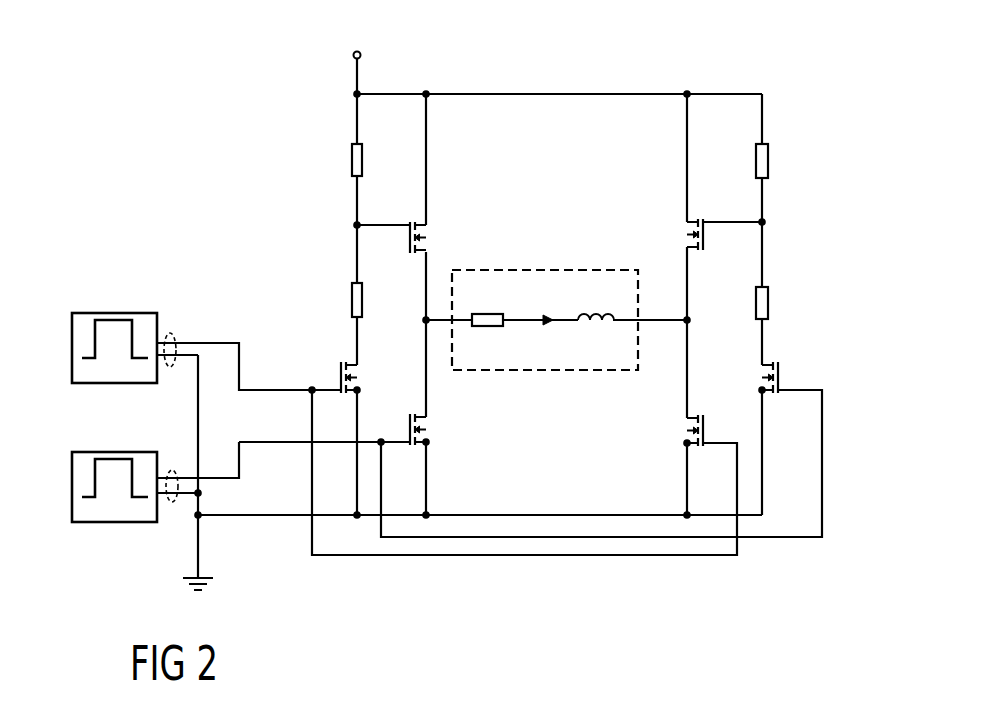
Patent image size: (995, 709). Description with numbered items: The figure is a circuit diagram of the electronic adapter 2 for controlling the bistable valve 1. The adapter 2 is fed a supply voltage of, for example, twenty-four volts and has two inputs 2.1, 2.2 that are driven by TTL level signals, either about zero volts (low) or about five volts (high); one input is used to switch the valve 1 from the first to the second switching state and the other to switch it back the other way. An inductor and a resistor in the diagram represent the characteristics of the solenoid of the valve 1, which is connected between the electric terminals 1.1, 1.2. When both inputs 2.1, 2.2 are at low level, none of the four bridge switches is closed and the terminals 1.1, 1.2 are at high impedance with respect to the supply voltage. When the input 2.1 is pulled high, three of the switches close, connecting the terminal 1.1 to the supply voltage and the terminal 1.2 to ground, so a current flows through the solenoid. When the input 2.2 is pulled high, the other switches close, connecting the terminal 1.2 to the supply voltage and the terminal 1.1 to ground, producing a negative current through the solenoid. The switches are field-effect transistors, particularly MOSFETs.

The bistable valve 1 is at (505, 270).
The electric terminal 1.1 is at (428, 323).
The electric terminal 1.2 is at (686, 322).
The electronic adapter 2 is at (201, 86).
The input 2.1 is at (171, 333).
The input 2.2 is at (172, 470).